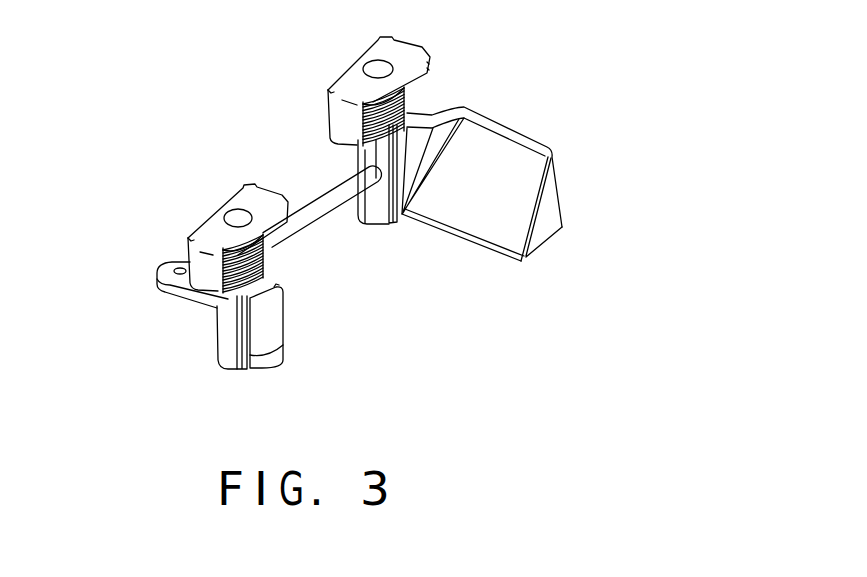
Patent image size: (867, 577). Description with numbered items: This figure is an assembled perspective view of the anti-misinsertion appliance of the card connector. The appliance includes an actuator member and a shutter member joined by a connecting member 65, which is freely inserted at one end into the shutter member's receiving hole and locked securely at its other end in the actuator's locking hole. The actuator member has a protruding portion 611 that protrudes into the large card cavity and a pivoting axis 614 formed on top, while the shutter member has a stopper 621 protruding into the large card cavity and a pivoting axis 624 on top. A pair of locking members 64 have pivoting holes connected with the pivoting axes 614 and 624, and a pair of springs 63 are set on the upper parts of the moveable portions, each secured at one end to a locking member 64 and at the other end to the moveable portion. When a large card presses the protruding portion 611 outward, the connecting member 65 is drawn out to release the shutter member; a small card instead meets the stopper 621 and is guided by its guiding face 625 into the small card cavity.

The locking member 64 is at (409, 50).
The pivoting axis 624 is at (377, 72).
The spring 63 is at (407, 115).
The connecting member 65 is at (328, 193).
The stopper 621 is at (527, 136).
The guiding face 625 is at (503, 208).
The pivoting axis 614 is at (238, 216).
The protruding portion 611 is at (268, 332).